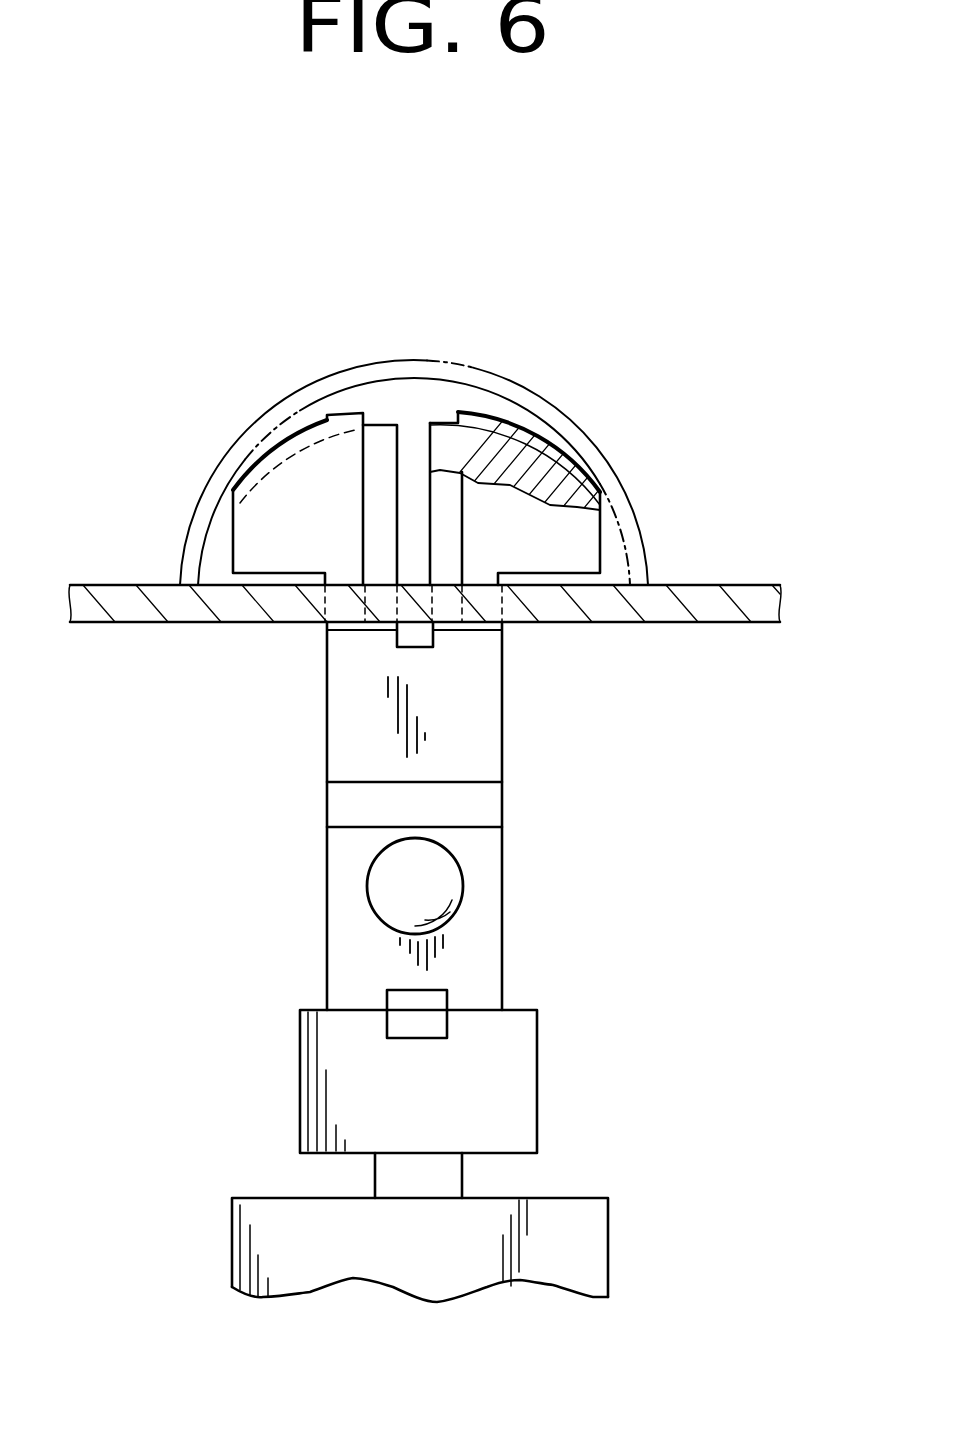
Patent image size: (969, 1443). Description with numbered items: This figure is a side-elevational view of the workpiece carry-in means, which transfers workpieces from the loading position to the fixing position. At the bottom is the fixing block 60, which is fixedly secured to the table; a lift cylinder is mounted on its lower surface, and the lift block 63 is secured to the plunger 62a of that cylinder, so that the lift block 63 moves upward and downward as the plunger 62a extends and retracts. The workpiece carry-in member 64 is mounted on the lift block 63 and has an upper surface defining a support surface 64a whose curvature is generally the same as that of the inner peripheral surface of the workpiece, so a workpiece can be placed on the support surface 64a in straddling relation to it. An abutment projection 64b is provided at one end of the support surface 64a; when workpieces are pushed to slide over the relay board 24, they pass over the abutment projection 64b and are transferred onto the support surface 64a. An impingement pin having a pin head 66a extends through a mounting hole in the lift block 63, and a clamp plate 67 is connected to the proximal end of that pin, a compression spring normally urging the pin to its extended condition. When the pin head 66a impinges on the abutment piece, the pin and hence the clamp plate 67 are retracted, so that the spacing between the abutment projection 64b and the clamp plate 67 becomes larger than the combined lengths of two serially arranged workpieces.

The relay board 24 is at (675, 610).
The fixing block 60 is at (583, 1248).
The plunger 62a is at (447, 1183).
The lift block 63 is at (503, 1063).
The workpiece carry-in member 64 is at (607, 465).
The support surface 64a is at (488, 425).
The abutment projection 64b is at (328, 425).
The pin head 66a is at (457, 883).
The clamp plate 67 is at (553, 445).